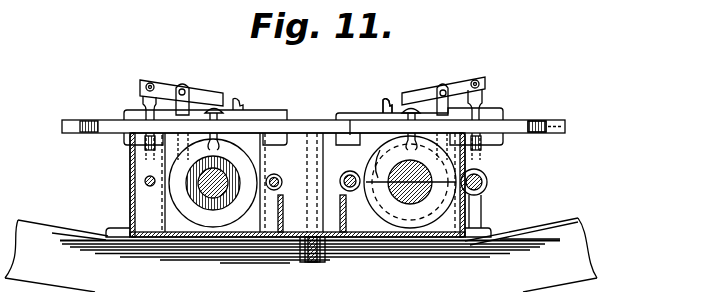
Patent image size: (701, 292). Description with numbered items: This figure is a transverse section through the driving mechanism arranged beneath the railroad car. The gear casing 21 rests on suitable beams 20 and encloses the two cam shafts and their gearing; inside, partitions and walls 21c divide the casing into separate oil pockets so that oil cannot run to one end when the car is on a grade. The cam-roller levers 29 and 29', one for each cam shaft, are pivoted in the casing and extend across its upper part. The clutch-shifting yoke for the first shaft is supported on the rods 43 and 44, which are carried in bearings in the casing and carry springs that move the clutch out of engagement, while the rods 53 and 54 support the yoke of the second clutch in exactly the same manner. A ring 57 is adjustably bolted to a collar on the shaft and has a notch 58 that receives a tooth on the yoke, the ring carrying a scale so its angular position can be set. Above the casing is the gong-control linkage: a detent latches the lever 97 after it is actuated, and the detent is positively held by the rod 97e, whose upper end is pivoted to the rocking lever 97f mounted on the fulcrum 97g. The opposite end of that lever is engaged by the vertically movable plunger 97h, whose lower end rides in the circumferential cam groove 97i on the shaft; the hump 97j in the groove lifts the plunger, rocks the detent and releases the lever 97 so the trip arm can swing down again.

The beams 20 is at (301, 255).
The gear casing 21 is at (130, 206).
The partitions and walls 21c is at (343, 193).
The lever 29 is at (313, 108).
The lever 29' is at (551, 109).
The rod 43 is at (146, 181).
The rod 44 is at (277, 178).
The rod 53 is at (488, 182).
The rod 54 is at (346, 176).
The ring 57 is at (196, 200).
The notch 58 is at (222, 137).
The lever 97 is at (181, 120).
The rod 97e is at (481, 101).
The rocking lever 97f is at (452, 84).
The fulcrum 97g is at (439, 89).
The plunger 97h is at (406, 110).
The cam groove 97i is at (382, 140).
The hump or raised portion 97j is at (358, 129).